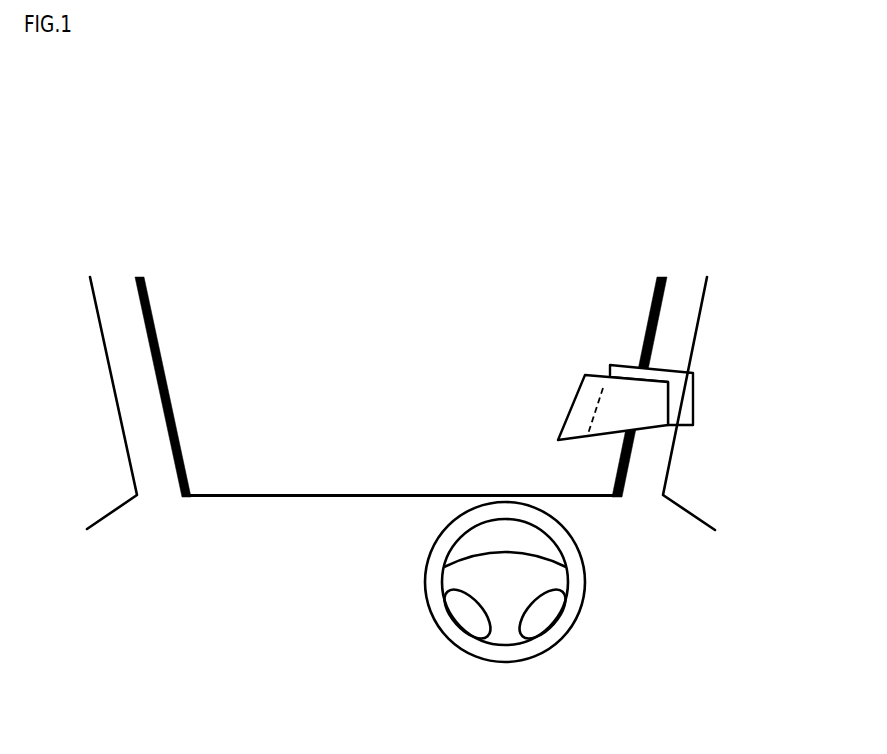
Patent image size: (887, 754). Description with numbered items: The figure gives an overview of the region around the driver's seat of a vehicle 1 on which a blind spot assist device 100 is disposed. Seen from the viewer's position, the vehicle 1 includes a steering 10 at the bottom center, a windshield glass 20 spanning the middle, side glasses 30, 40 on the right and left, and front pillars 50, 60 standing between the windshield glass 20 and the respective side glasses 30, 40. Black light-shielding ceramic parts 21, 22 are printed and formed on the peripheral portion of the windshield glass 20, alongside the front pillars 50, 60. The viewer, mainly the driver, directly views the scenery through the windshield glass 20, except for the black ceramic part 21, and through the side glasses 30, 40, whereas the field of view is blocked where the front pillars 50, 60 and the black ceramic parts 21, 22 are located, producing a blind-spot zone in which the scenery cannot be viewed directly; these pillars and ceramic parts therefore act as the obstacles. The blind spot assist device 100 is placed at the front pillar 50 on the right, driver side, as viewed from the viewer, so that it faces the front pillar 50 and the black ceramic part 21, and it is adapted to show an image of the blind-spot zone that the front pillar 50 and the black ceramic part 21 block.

The vehicle 1 is at (625, 267).
The steering 10 is at (583, 567).
The windshield glass 20 is at (263, 295).
The black ceramic part 21 is at (649, 319).
The black ceramic part 22 is at (153, 317).
The side glass 30 is at (718, 315).
The side glass 40 is at (84, 315).
The front pillar 50 is at (685, 290).
The front pillar 60 is at (125, 290).
The blind spot assist device 100 is at (698, 382).